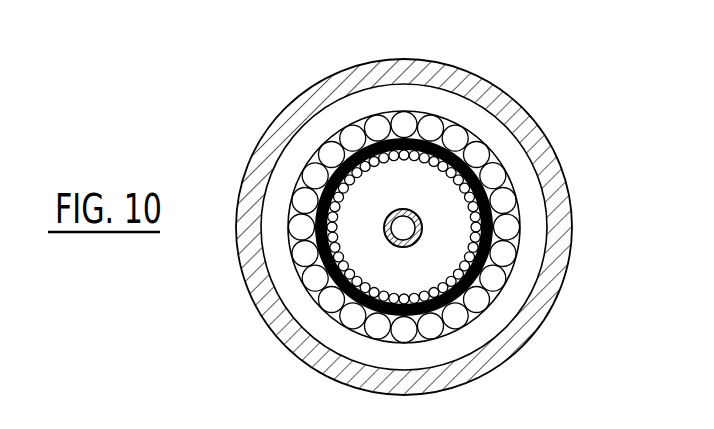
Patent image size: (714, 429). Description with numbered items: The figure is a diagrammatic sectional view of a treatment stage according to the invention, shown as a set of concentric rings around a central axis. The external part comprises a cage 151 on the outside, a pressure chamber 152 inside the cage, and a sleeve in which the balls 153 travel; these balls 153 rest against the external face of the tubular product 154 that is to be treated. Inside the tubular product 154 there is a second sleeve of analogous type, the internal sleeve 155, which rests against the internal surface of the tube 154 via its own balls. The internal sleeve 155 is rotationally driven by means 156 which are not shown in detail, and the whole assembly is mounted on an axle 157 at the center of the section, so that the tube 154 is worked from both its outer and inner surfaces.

The cage 151 is at (555, 157).
The pressure chamber 152 is at (505, 140).
The balls 153 is at (457, 130).
The tubular product 154 is at (383, 117).
The sleeve 155 is at (453, 213).
The means 156 is at (475, 237).
The axle 157 is at (312, 274).